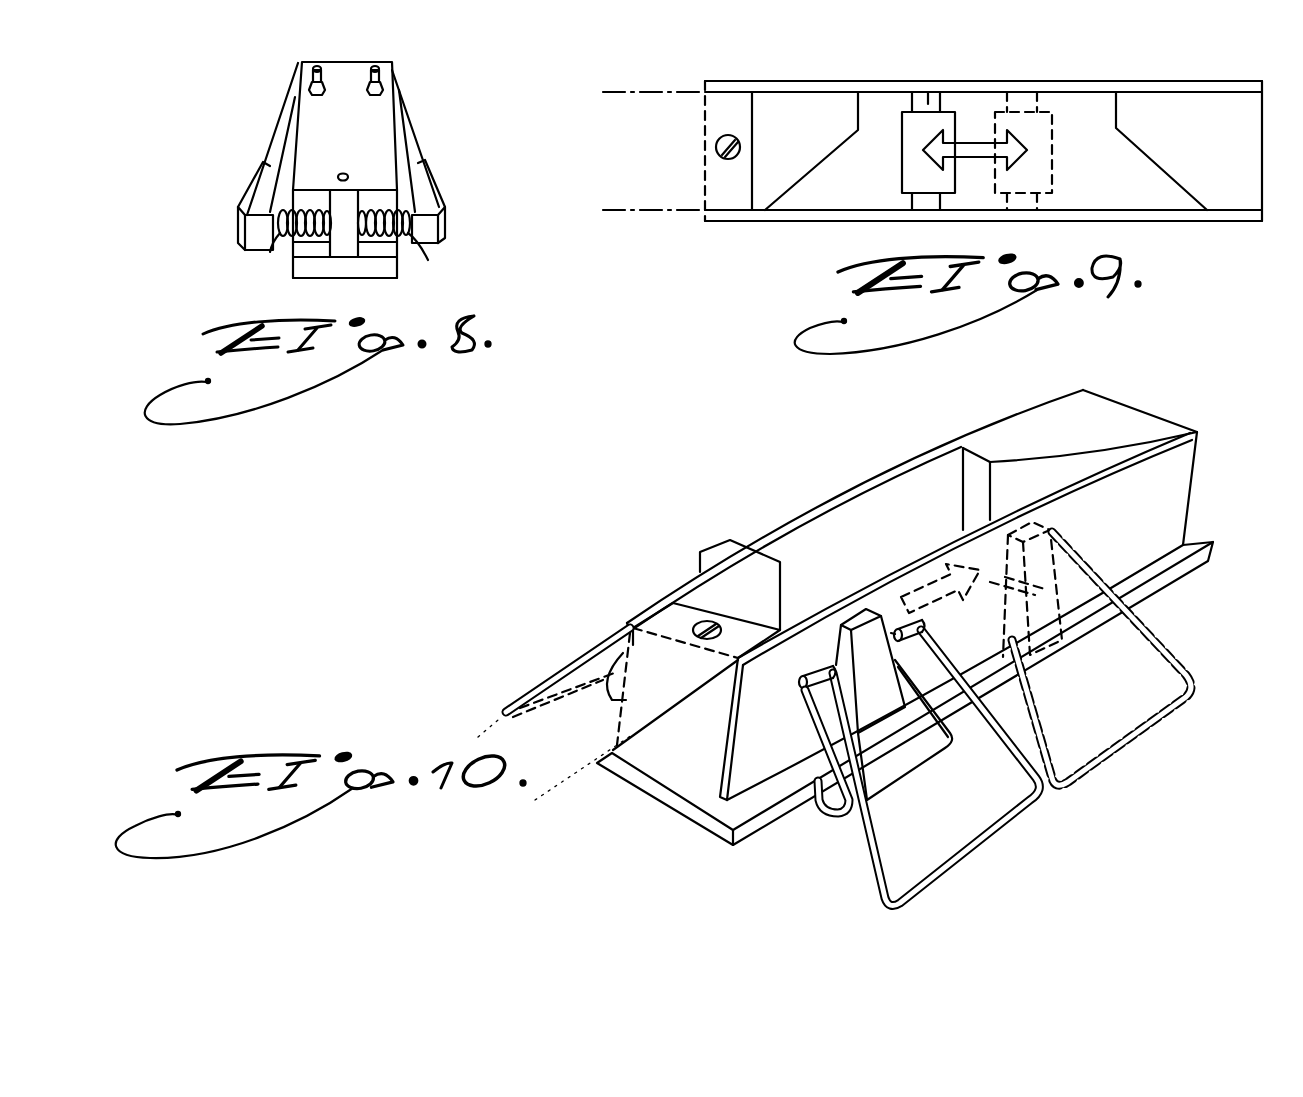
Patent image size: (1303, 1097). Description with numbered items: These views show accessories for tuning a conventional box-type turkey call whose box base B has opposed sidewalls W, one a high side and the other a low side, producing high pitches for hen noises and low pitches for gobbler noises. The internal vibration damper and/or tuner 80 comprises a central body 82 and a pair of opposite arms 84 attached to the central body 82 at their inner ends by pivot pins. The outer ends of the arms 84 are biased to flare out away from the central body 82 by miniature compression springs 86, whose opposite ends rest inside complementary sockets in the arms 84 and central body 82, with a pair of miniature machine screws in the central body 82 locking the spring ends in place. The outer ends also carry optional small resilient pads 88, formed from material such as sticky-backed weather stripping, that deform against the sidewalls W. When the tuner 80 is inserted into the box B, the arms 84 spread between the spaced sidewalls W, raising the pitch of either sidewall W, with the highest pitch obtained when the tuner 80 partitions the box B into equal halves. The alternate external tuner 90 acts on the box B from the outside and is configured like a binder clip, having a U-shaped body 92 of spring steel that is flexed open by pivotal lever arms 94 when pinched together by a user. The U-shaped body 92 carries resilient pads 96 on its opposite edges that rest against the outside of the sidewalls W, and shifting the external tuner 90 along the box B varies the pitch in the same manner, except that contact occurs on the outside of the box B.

In FIG. 8, the internal vibration damper and/or tuner 80 is at (335, 162).
In FIG. 9, the internal vibration damper and/or tuner 80 is at (902, 177).
In FIG. 8, the central body 82 is at (355, 146).
In FIG. 8, the arms 84 is at (288, 130).
In FIG. 9, the arms 84 is at (928, 104).
In FIG. 8, the compression springs 86 is at (281, 238).
In FIG. 8, the resilient pads 88 is at (252, 189).
In FIG. 10, the external tuner 90 is at (828, 822).
In FIG. 10, the U-shaped body 92 is at (927, 750).
In FIG. 10, the pivotal lever arms 94 is at (966, 857).
In FIG. 10, the resilient pads 96 is at (727, 540).
In FIG. 9, the sidewalls W is at (1157, 80).
In FIG. 10, the sidewalls W is at (976, 434).
In FIG. 9, the box base B is at (1257, 150).
In FIG. 10, the box base B is at (1143, 418).